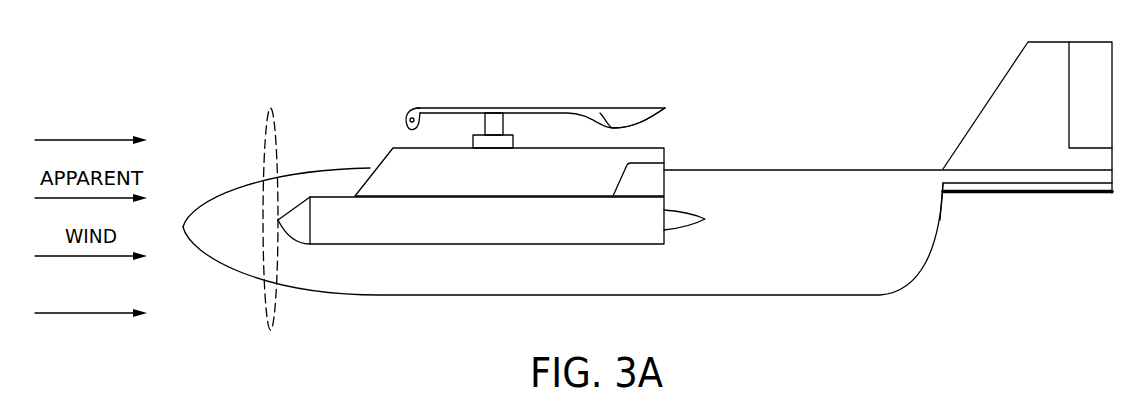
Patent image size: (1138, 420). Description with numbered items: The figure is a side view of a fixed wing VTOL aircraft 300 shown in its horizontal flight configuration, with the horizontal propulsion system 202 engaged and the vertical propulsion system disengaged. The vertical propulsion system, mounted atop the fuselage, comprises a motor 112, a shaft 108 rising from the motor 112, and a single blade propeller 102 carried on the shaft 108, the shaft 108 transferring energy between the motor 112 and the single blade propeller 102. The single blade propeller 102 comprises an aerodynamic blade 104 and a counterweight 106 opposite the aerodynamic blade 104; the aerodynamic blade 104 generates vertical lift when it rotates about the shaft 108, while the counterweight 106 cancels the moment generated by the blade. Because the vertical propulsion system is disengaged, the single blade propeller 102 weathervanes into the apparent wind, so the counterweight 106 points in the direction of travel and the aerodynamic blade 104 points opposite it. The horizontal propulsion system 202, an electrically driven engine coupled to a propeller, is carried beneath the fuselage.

The VTOL aircraft 300 is at (226, 74).
The single blade propeller 102 is at (513, 108).
The aerodynamic blade 104 is at (633, 113).
The counterweight 106 is at (408, 112).
The shaft 108 is at (495, 120).
The motor 112 is at (485, 143).
The horizontal propulsion system 202 is at (417, 218).